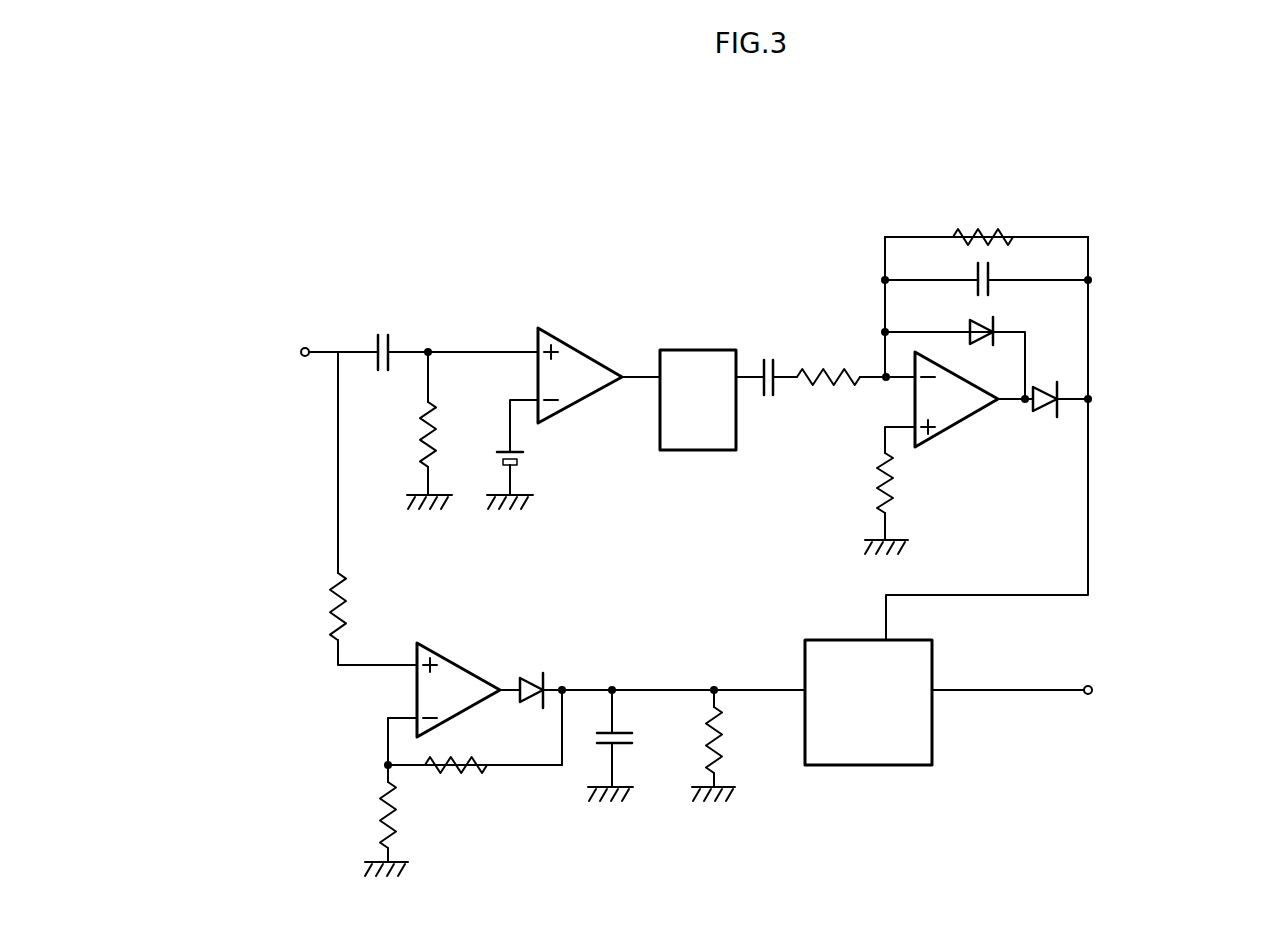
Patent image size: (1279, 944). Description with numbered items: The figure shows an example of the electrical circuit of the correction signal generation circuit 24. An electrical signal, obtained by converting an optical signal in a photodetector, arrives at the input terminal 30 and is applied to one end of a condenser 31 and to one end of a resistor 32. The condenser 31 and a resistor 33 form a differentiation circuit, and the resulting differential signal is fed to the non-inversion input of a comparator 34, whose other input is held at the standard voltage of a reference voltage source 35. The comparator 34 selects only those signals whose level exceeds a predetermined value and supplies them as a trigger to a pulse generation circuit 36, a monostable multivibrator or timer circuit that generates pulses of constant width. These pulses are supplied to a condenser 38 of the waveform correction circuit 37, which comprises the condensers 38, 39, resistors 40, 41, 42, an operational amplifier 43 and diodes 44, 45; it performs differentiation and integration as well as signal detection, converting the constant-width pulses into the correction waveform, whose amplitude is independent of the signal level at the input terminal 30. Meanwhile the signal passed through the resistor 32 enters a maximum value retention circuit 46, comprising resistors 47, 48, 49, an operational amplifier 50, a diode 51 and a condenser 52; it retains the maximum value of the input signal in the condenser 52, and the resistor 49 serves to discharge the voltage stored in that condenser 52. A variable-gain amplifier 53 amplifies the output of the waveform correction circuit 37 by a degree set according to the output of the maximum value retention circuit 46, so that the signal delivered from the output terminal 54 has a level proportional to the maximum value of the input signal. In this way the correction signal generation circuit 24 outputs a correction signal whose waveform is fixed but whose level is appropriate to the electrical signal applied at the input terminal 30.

The correction signal generation circuit 24 is at (1235, 172).
The input terminal 30 is at (306, 346).
The condenser 31 is at (392, 342).
The resistor 32 is at (332, 590).
The resistor 33 is at (425, 441).
The comparator 34 is at (574, 344).
The reference voltage source 35 is at (525, 450).
The pulse generation circuit 36 is at (701, 350).
The waveform correction circuit 37 is at (953, 212).
The condenser 38 is at (777, 360).
The condenser 39 is at (994, 290).
The resistor 40 is at (827, 373).
The resistor 41 is at (891, 488).
The resistor 42 is at (1012, 237).
The operational amplifier 43 is at (964, 425).
The diode 44 is at (964, 328).
The diode 45 is at (1063, 383).
The maximum value retention circuit 46 is at (607, 627).
The resistor 47 is at (383, 822).
The resistor 48 is at (465, 772).
The resistor 49 is at (720, 742).
The operational amplifier 50 is at (466, 662).
The diode 51 is at (547, 678).
The condenser 52 is at (624, 735).
The variable-gain amplifier 53 is at (932, 750).
The output terminal 54 is at (1094, 697).